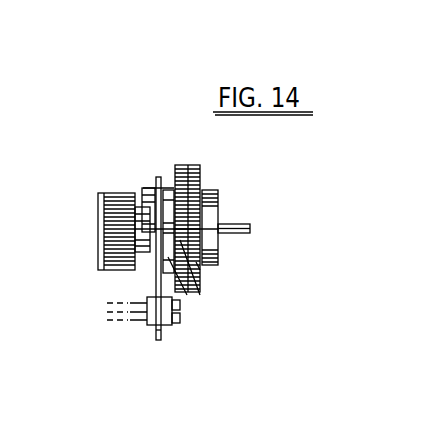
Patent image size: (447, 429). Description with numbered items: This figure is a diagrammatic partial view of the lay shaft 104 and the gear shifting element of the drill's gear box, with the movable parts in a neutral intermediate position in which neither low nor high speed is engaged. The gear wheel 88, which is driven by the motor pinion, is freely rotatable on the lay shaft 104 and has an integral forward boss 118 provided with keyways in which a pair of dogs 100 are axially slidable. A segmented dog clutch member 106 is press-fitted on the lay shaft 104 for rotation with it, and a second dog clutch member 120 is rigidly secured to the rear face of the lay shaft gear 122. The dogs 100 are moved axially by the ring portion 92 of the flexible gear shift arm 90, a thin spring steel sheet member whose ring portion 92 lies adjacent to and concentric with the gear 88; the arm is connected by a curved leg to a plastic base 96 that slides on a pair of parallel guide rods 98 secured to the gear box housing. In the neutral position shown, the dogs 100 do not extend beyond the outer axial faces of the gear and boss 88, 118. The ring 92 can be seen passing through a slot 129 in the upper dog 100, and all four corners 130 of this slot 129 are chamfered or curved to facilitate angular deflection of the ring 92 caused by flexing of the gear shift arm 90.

The gear wheel 88 is at (196, 166).
The flexible gear shift arm 90 is at (152, 273).
The ring portion 92 is at (156, 178).
The plastic base 96 is at (159, 342).
The guide rods 98 is at (133, 328).
The dogs 100 is at (200, 270).
The lay shaft 104 is at (246, 224).
The segmented dog clutch member 106 is at (218, 200).
The forward boss 118 is at (170, 270).
The second dog clutch member 120 is at (110, 222).
The lay shaft gear 122 is at (100, 194).
The slot 129 is at (150, 212).
The corners 130 is at (170, 188).